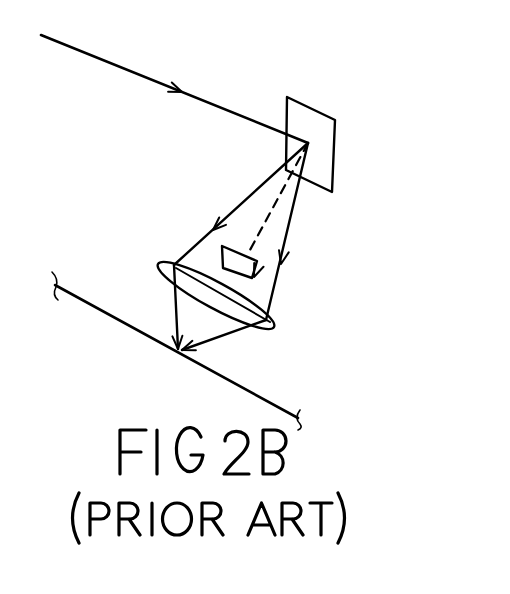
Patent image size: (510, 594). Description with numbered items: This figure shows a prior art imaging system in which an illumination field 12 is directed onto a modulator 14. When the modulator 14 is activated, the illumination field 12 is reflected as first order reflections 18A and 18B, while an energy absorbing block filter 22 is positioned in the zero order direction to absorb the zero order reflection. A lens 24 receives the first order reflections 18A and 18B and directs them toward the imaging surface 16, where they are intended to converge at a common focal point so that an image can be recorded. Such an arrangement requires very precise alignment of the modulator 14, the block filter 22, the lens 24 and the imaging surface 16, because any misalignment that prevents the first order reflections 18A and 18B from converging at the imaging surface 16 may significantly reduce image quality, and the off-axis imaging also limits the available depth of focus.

The illumination field 12 is at (127, 73).
The modulator 14 is at (318, 111).
The imaging surface 16 is at (112, 317).
The first order reflection 18A is at (238, 205).
The first order reflection 18B is at (284, 251).
The energy absorbing block filter 22 is at (270, 294).
The lens 24 is at (158, 266).